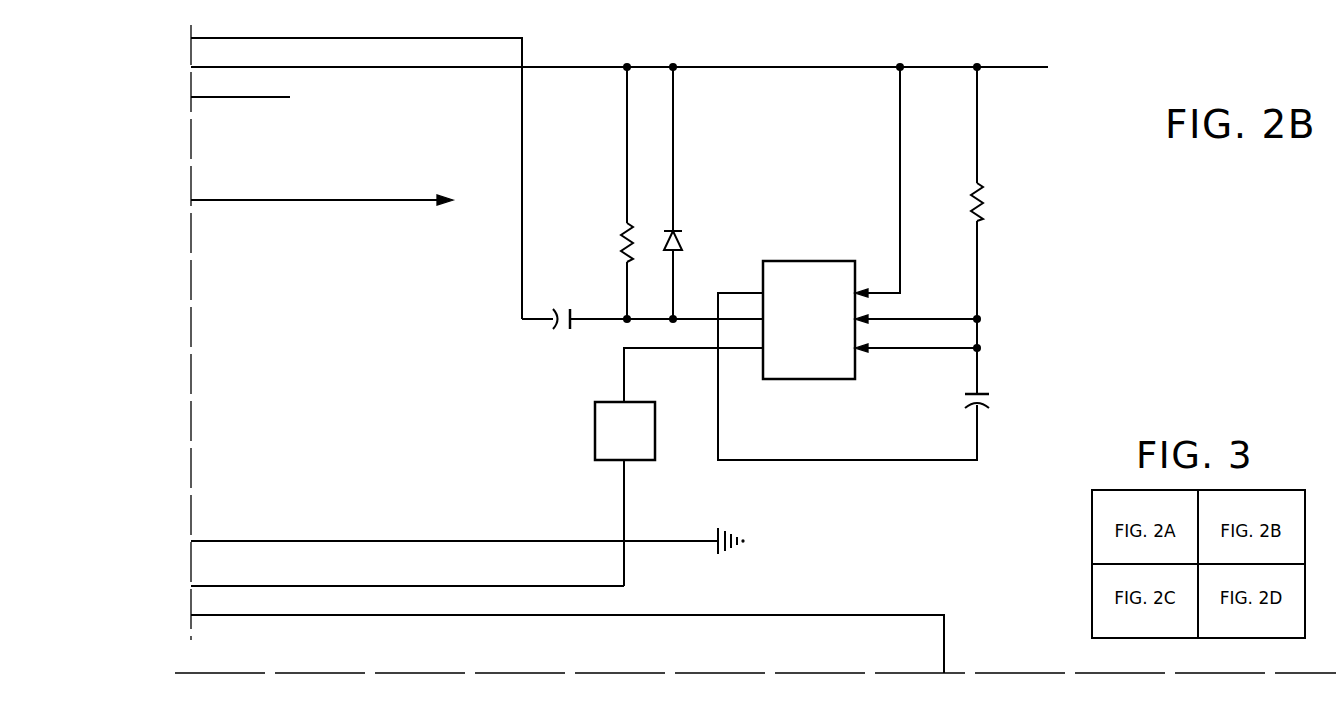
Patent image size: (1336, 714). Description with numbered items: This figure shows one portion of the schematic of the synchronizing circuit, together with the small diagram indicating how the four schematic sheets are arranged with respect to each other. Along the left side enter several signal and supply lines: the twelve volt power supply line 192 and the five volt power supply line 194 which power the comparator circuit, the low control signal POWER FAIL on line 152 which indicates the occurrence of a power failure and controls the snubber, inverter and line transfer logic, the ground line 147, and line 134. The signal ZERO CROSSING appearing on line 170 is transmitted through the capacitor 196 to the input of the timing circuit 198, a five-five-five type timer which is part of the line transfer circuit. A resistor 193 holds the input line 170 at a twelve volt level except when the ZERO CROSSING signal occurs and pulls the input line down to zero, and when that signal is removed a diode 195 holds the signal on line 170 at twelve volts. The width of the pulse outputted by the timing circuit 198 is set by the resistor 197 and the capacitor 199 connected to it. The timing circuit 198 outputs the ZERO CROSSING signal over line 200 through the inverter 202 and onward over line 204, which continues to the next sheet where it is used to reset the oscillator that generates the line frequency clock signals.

The bus line 134 is at (660, 616).
The ground line 147 is at (420, 540).
The line 152 is at (370, 201).
The line 170 is at (522, 258).
The line 192 is at (483, 66).
The resistor 193 is at (623, 226).
The line 194 is at (258, 98).
The diode 195 is at (690, 238).
The capacitor 196 is at (553, 325).
The resistor 197 is at (972, 186).
The 555 timing circuit 198 is at (825, 265).
The capacitor 199 is at (968, 393).
The line 200 is at (648, 349).
The inverter 202 is at (595, 432).
The line 204 is at (520, 585).